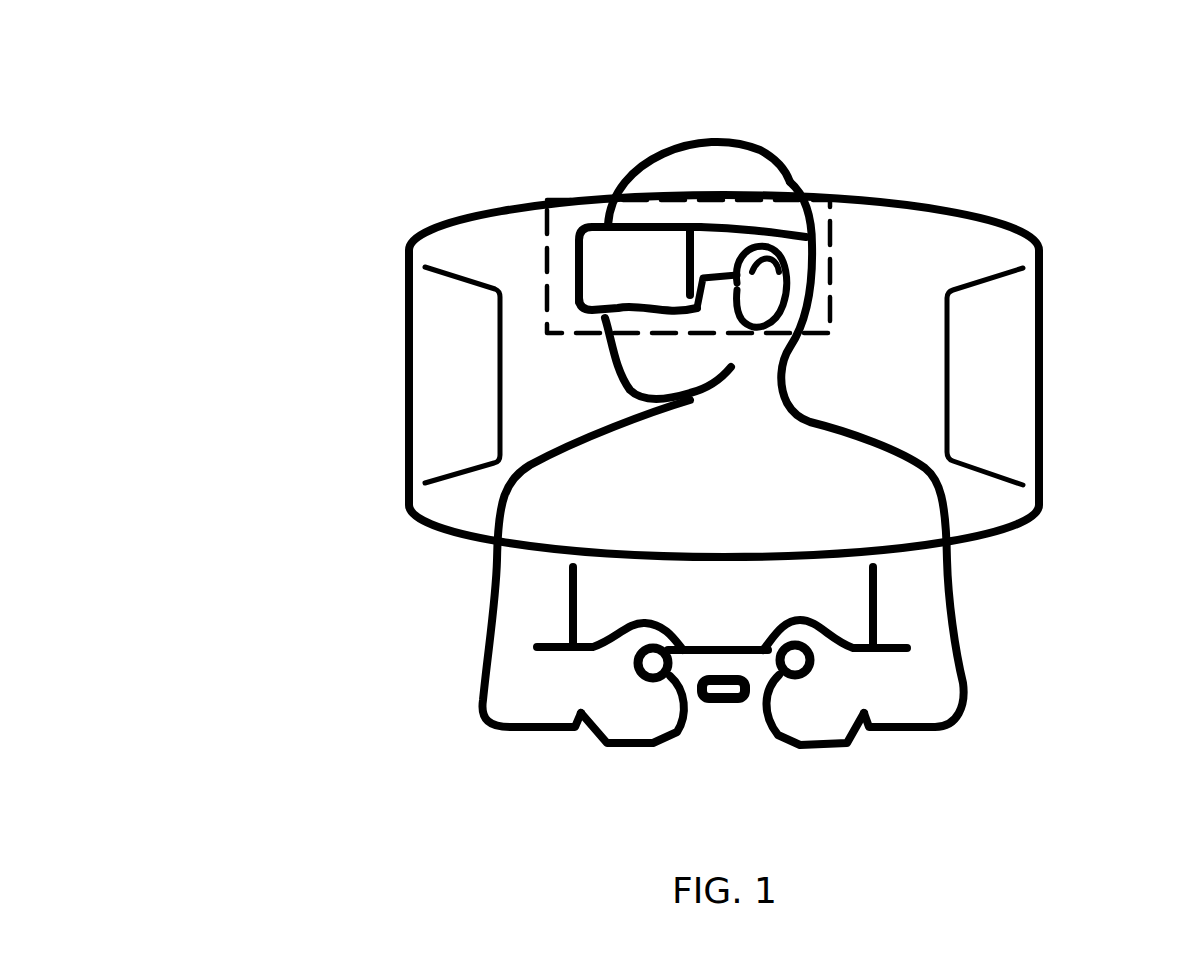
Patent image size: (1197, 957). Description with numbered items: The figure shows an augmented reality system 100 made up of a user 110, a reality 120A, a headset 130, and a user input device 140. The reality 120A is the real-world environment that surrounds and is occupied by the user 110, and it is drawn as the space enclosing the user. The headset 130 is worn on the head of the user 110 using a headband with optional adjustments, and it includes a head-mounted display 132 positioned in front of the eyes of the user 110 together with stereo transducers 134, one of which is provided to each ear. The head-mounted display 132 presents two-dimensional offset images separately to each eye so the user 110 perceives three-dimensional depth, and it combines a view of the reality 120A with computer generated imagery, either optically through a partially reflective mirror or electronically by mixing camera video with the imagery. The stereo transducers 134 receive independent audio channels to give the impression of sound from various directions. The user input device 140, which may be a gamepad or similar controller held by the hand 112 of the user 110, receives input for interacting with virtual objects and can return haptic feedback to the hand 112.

The system 100 is at (230, 78).
The user 110 is at (683, 158).
The hand 112 is at (630, 738).
The reality 120A is at (407, 353).
The headset 130 is at (833, 266).
The head-mounted display (HMD) 132 is at (577, 227).
The stereo transducers 134 is at (777, 233).
The user input device 140 is at (713, 690).